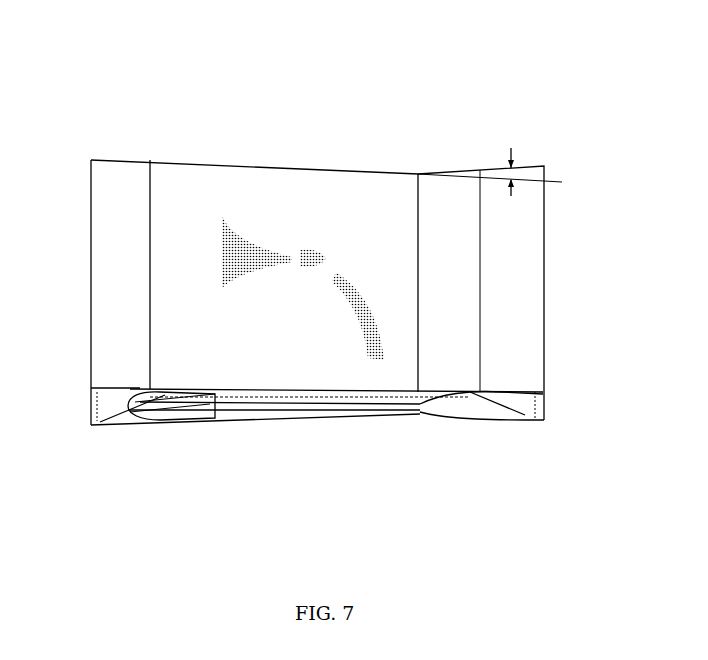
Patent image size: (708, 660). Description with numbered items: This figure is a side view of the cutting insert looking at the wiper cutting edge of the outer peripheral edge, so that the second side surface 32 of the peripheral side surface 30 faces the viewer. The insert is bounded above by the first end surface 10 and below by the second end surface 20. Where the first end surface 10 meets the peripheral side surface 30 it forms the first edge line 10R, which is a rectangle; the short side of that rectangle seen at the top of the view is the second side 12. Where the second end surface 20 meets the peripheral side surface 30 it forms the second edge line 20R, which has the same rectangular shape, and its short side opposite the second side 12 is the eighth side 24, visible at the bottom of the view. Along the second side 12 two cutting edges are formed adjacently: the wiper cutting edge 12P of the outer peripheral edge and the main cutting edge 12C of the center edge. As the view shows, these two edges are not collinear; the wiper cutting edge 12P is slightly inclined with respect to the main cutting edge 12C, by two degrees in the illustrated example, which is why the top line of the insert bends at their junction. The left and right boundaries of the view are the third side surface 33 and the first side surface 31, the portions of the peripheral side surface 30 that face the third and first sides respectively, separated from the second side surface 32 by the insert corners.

The first end surface 10 is at (186, 157).
The first edge line 10R is at (547, 163).
The second side 12 is at (460, 49).
The main cutting edge of the center edge 12C is at (288, 165).
The wiper cutting edge of the outer peripheral edge 12P is at (447, 168).
The second end surface 20 is at (168, 409).
The second edge line 20R is at (546, 423).
The eighth side 24 is at (272, 400).
The peripheral side surface 30 is at (386, 368).
The first side surface 31 is at (545, 275).
The second side surface 32 is at (320, 355).
The third side surface 33 is at (90, 272).